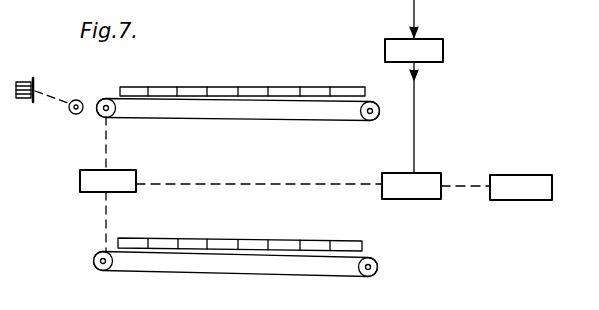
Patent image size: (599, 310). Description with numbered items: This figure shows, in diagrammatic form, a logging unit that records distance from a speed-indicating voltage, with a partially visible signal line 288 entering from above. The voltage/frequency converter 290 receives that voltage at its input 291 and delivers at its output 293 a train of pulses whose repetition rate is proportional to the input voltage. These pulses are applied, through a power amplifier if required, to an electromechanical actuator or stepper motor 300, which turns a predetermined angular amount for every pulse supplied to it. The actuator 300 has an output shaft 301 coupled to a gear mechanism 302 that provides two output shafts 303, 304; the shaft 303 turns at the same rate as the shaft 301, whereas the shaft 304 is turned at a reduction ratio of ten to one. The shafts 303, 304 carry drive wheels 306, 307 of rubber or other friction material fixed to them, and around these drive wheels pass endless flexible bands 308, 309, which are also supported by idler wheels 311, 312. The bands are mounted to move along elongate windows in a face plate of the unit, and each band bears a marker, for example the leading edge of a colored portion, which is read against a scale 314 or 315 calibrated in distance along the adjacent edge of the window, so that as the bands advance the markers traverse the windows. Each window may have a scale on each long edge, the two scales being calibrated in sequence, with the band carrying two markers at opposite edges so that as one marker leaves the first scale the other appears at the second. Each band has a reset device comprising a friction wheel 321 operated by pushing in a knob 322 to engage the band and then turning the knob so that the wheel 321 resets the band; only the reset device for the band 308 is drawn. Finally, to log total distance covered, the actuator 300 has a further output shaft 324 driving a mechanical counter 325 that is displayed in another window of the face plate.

The signal line 288 is at (297, 5).
The voltage/frequency converter 290 is at (414, 51).
The input 291 is at (418, 24).
The output 293 is at (416, 127).
The electromechanical actuator or stepper motor 300 is at (411, 186).
The output shaft 301 is at (290, 160).
The gear mechanism 302 is at (108, 181).
The output shaft 303 is at (106, 147).
The output shaft 304 is at (105, 209).
The drive wheel 306 is at (104, 98).
The drive wheel 307 is at (94, 262).
The endless flexible band 308 is at (211, 121).
The endless flexible band 309 is at (300, 270).
The idler wheel 311 is at (375, 122).
The idler wheel 312 is at (380, 263).
The scale 314 is at (248, 87).
The scale 315 is at (228, 238).
The friction wheel 321 is at (68, 113).
The knob 322 is at (38, 65).
The further output shaft 324 is at (466, 185).
The mechanical counter 325 is at (521, 187).